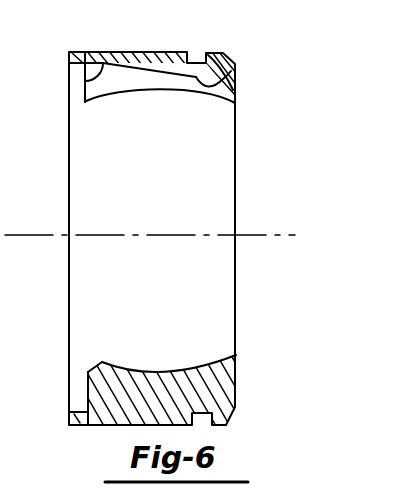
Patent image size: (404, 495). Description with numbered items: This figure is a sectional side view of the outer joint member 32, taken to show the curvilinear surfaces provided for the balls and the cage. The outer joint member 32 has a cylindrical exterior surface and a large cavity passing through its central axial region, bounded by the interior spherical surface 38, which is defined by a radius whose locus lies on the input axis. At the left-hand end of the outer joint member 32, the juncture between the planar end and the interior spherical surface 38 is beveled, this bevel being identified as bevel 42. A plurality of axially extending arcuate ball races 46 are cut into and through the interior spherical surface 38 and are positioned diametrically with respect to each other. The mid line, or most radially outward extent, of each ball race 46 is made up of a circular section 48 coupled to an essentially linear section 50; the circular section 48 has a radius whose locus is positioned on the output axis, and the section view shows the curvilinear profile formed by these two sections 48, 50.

The outer joint member 32 is at (154, 52).
The interior spherical surface 38 is at (178, 372).
The bevel 42 is at (101, 362).
The ball races 46 is at (130, 84).
The circular section 48 is at (215, 89).
The linear section 50 is at (93, 87).